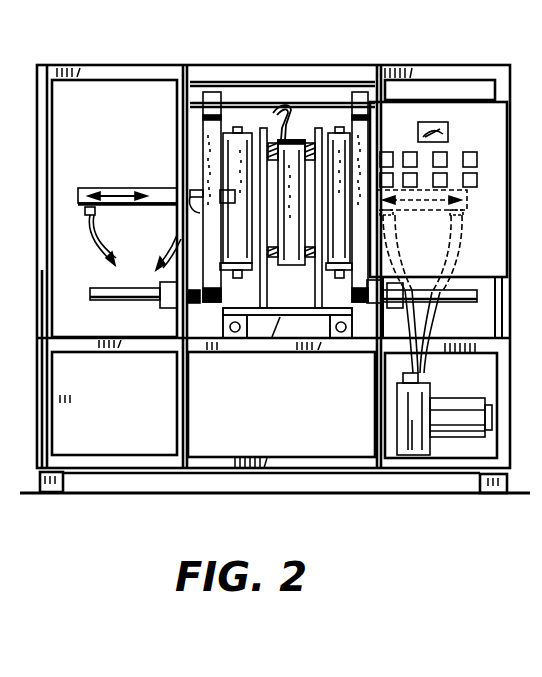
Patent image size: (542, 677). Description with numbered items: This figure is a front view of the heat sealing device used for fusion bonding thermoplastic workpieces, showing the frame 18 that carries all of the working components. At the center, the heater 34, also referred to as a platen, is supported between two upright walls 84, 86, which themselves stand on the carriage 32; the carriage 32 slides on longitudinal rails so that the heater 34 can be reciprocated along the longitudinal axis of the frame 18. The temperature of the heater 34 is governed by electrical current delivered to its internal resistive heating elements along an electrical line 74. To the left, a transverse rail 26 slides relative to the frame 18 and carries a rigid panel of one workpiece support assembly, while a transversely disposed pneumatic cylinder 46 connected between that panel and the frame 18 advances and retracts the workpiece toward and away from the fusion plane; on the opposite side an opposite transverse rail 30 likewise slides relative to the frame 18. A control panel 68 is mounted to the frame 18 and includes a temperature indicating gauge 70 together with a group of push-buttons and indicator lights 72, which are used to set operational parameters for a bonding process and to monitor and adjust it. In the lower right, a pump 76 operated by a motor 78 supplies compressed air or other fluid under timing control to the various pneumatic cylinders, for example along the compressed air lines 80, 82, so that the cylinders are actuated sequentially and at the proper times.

The frame 18 is at (108, 73).
The pneumatic cylinder 46 is at (119, 187).
The transverse rail 26 is at (117, 304).
The upright wall 84 is at (262, 128).
The electrical line 74 is at (266, 112).
The heater 34 is at (290, 143).
The upright wall 86 is at (320, 128).
The carriage 32 is at (280, 322).
The control panel 68 is at (430, 108).
The temperature indicating gauge 70 is at (448, 128).
The push-buttons and indicator lights 72 is at (483, 159).
The compressed air line 82 is at (406, 285).
The compressed air line 80 is at (456, 290).
The transverse rail 30 is at (461, 300).
The pump 76 is at (405, 410).
The motor 78 is at (450, 408).